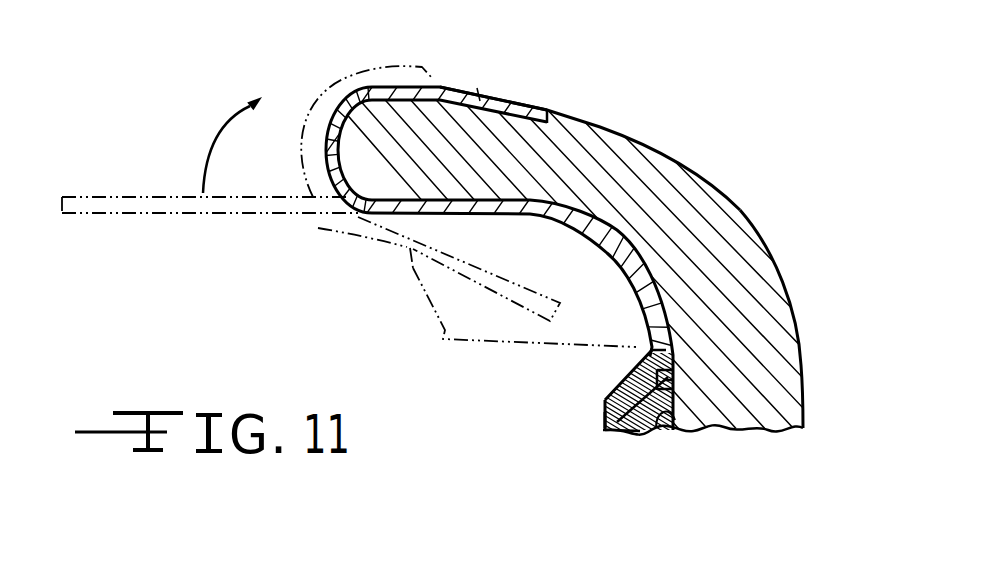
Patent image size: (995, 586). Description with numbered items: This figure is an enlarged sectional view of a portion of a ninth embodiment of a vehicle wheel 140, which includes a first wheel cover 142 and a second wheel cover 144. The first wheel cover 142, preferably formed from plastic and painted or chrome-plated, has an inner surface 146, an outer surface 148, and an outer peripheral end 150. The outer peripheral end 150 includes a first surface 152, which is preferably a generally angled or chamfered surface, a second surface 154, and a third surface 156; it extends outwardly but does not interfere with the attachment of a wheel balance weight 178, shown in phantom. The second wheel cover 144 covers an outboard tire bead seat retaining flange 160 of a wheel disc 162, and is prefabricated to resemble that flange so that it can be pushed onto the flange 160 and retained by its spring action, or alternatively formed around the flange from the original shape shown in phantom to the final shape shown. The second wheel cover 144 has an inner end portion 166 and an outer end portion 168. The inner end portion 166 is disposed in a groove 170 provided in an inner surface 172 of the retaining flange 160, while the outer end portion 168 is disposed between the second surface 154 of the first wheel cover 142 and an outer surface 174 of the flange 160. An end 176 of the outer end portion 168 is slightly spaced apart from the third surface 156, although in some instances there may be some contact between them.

The vehicle wheel 140 is at (459, 329).
The first wheel cover 142 is at (589, 406).
The second wheel cover 144 is at (349, 224).
The inner surface 146 is at (720, 427).
The outer surface 148 is at (600, 420).
The outer peripheral end 150 is at (616, 345).
The first surface 152 is at (621, 382).
The second surface 154 is at (660, 350).
The third surface 156 is at (660, 383).
The outboard tire bead seat retaining flange 160 is at (702, 205).
The wheel disc 162 is at (780, 232).
The inner end portion 166 is at (460, 97).
The outer end portion 168 is at (658, 371).
The groove 170 is at (492, 100).
The inner surface 172 is at (803, 384).
The outer surface 174 is at (661, 430).
The end 176 is at (623, 432).
The wheel balance weight 178 is at (410, 268).